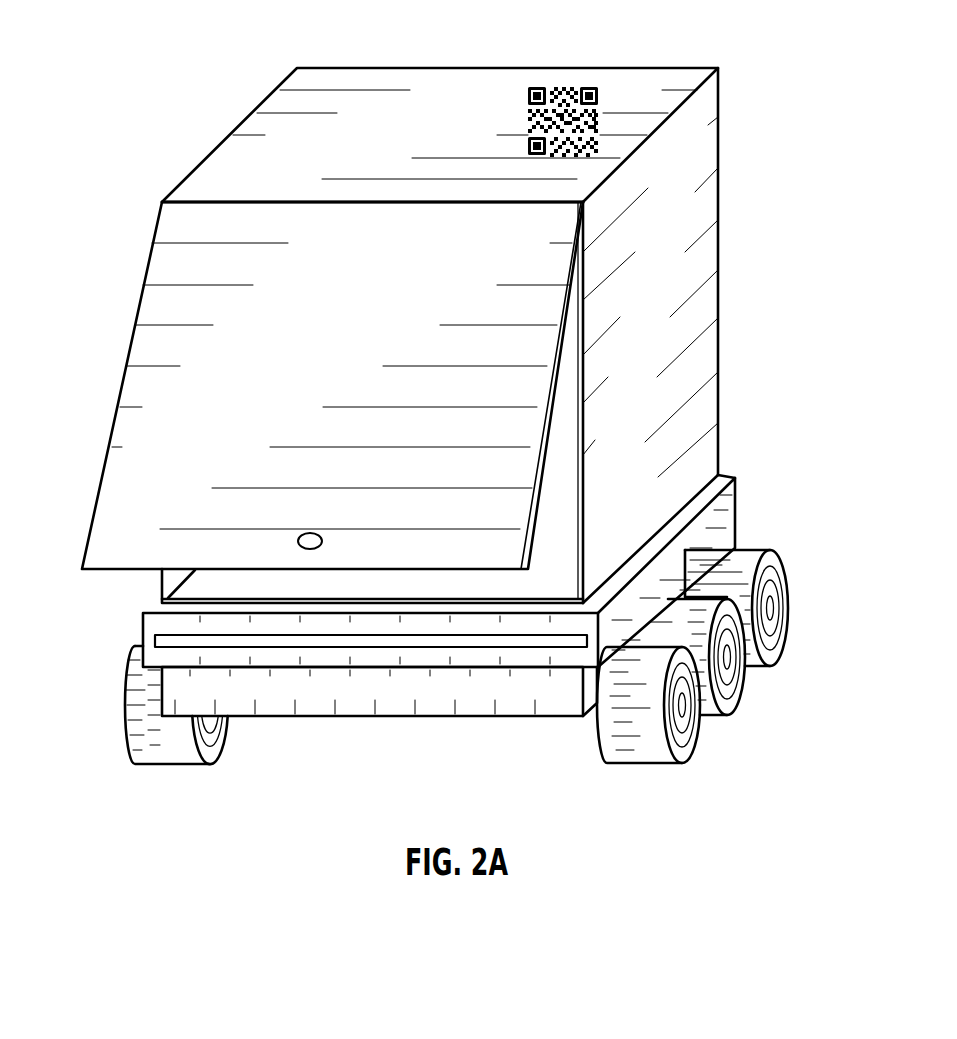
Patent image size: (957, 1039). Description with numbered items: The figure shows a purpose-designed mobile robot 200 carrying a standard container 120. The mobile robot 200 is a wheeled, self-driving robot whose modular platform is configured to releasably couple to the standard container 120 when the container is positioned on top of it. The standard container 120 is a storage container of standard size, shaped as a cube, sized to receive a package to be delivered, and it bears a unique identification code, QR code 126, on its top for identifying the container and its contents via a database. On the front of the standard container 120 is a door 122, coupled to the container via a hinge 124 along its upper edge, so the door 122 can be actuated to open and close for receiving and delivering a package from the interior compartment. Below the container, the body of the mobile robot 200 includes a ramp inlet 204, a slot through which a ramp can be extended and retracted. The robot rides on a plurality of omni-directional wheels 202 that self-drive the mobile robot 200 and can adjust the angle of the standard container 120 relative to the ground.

The standard container 120 is at (712, 257).
The door 122 is at (138, 392).
The hinge 124 is at (216, 202).
The QR code 126 is at (563, 92).
The mobile robot 200 is at (727, 505).
The wheel 202 is at (790, 602).
The ramp inlet 204 is at (157, 639).